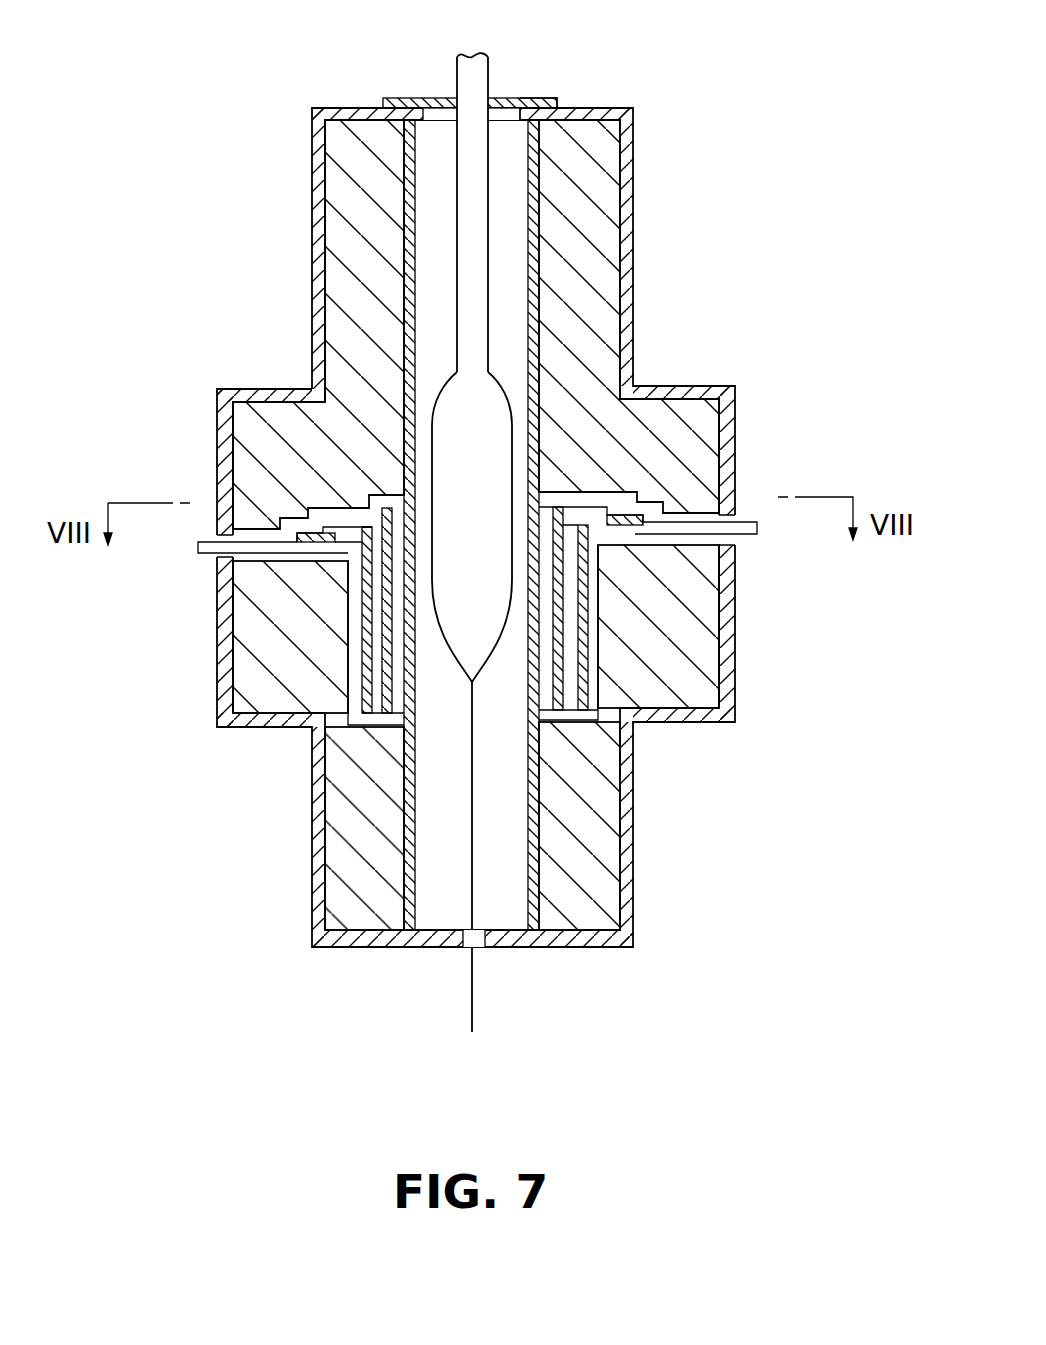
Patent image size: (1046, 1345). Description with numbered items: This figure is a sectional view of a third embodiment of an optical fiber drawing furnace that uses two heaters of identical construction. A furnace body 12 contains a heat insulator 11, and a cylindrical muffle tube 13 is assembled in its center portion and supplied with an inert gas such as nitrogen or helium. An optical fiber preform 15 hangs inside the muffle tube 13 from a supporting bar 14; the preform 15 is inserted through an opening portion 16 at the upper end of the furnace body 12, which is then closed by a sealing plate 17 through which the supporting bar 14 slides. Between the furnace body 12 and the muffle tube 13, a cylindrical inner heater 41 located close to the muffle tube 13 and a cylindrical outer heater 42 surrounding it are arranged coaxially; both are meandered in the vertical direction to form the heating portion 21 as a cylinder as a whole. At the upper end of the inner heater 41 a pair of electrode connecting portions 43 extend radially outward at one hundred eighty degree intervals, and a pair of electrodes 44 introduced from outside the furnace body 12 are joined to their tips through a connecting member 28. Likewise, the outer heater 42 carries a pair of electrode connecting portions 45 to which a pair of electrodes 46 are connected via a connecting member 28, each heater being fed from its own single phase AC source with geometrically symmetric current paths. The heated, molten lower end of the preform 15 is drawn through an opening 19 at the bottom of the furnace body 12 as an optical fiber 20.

The heat insulator 11 is at (597, 388).
The furnace body 12 is at (727, 423).
The muffle tube 13 is at (536, 345).
The supporting bar 14 is at (482, 70).
The optical fiber preform 15 is at (453, 418).
The opening portion 16 is at (438, 116).
The sealing plate 17 is at (527, 98).
The opening 19 is at (468, 940).
The optical fiber 20 is at (473, 1003).
The heating portion 21 is at (382, 660).
The connecting member 28 is at (330, 548).
The inner heater 41 is at (392, 722).
The outer heater 42 is at (588, 717).
The electrode connecting portion 43 is at (600, 507).
The electrode 44 is at (745, 534).
The electrode connecting portion 45 is at (333, 527).
The electrode 46 is at (220, 546).